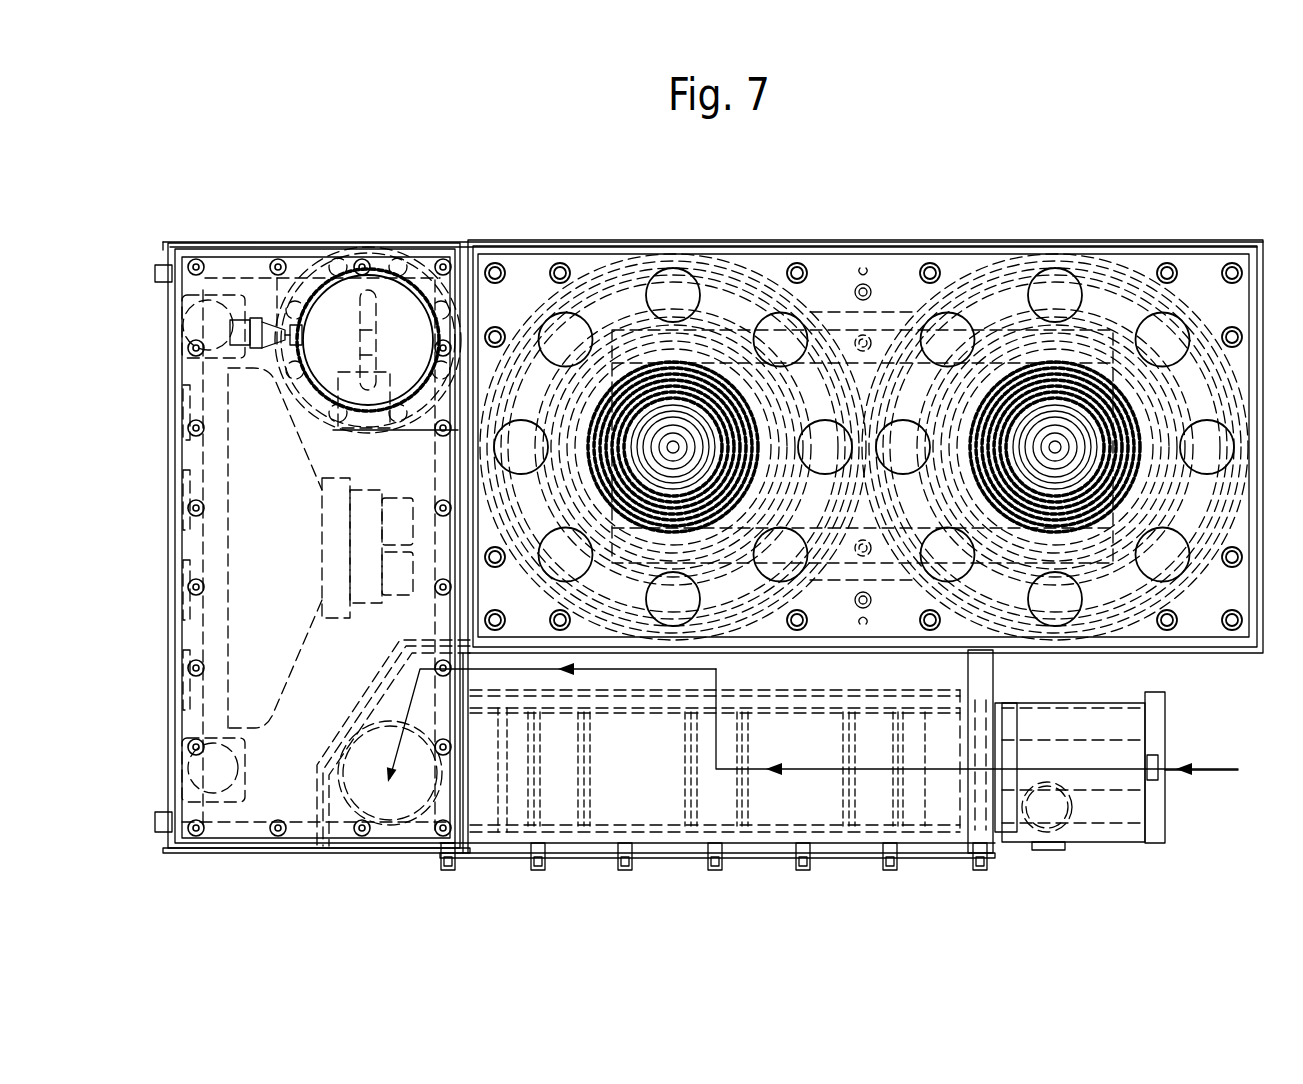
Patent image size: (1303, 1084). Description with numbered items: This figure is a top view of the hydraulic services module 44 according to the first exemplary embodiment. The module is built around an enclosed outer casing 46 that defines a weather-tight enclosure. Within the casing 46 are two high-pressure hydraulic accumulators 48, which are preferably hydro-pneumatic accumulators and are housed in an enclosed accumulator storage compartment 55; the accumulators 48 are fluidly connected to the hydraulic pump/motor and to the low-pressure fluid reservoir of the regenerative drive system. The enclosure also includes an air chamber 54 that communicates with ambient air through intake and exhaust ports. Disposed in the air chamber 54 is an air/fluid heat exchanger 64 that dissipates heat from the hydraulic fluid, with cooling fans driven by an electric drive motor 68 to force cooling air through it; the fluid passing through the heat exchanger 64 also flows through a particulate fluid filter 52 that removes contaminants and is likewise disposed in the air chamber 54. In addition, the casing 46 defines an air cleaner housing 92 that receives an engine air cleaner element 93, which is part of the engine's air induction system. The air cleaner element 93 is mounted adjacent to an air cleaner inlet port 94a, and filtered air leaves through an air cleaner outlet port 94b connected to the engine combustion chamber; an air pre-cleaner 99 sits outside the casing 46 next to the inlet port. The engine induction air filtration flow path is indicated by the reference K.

The hydraulic services module 44 is at (1086, 229).
The outer casing 46 is at (730, 240).
The high-pressure hydraulic accumulators 48 is at (603, 350).
The particulate fluid filter 52 is at (345, 310).
The air chamber 54 is at (255, 807).
The accumulator storage compartment 55 is at (877, 335).
The heat exchanger 64 is at (195, 718).
The drive motor 68 is at (365, 597).
The air cleaner housing 92 is at (923, 665).
The air cleaner element 93 is at (643, 807).
The air cleaner inlet port 94a is at (960, 803).
The air cleaner outlet port 94b is at (348, 795).
The air pre-cleaner 99 is at (1113, 807).
The engine induction air filtration flow path K is at (1230, 768).